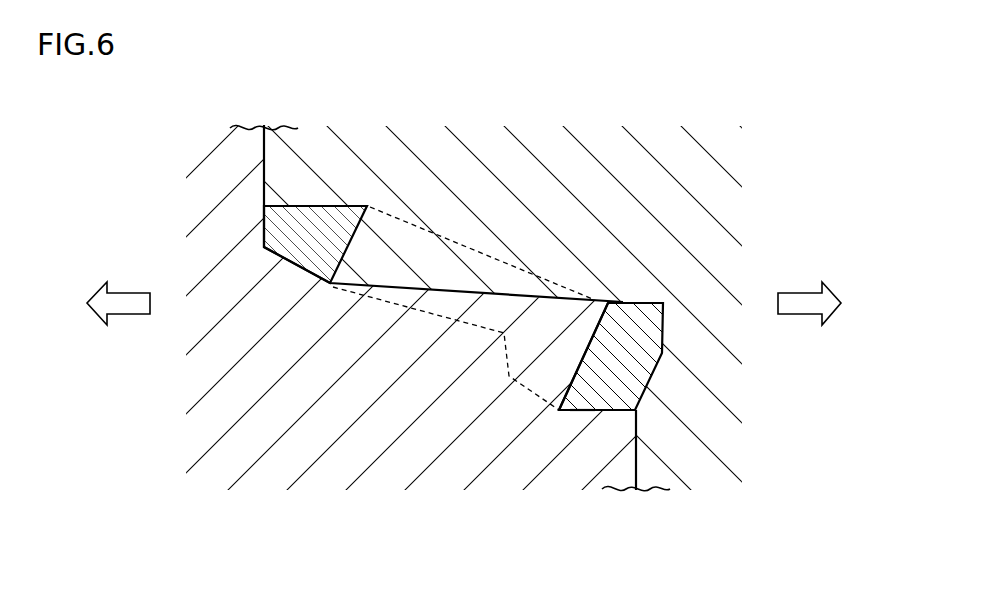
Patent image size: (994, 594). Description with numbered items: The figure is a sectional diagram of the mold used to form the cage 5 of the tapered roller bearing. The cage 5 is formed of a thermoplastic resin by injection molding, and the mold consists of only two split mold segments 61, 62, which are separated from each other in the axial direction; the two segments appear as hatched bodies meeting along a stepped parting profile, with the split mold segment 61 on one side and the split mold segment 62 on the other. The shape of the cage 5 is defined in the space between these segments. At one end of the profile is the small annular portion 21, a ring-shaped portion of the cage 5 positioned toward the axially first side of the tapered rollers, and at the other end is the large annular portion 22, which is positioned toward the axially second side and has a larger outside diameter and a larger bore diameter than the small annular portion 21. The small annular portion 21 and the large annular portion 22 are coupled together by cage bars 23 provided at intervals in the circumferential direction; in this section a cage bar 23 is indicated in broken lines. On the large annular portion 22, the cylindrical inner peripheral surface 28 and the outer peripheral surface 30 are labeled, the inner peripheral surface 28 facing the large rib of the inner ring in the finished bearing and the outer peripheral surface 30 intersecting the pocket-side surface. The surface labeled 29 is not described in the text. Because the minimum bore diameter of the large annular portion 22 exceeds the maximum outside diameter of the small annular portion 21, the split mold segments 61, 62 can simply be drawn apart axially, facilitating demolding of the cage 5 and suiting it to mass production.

The cage 5 is at (582, 412).
The small annular portion 21 is at (330, 228).
The large annular portion 22 is at (638, 369).
The cage bar 23 is at (387, 304).
The inner peripheral surface 28 is at (638, 301).
The inclined side surface 29 is at (572, 383).
The outer peripheral surface 30 is at (610, 413).
The split mold segment 61 is at (531, 184).
The split mold segment 62 is at (387, 425).